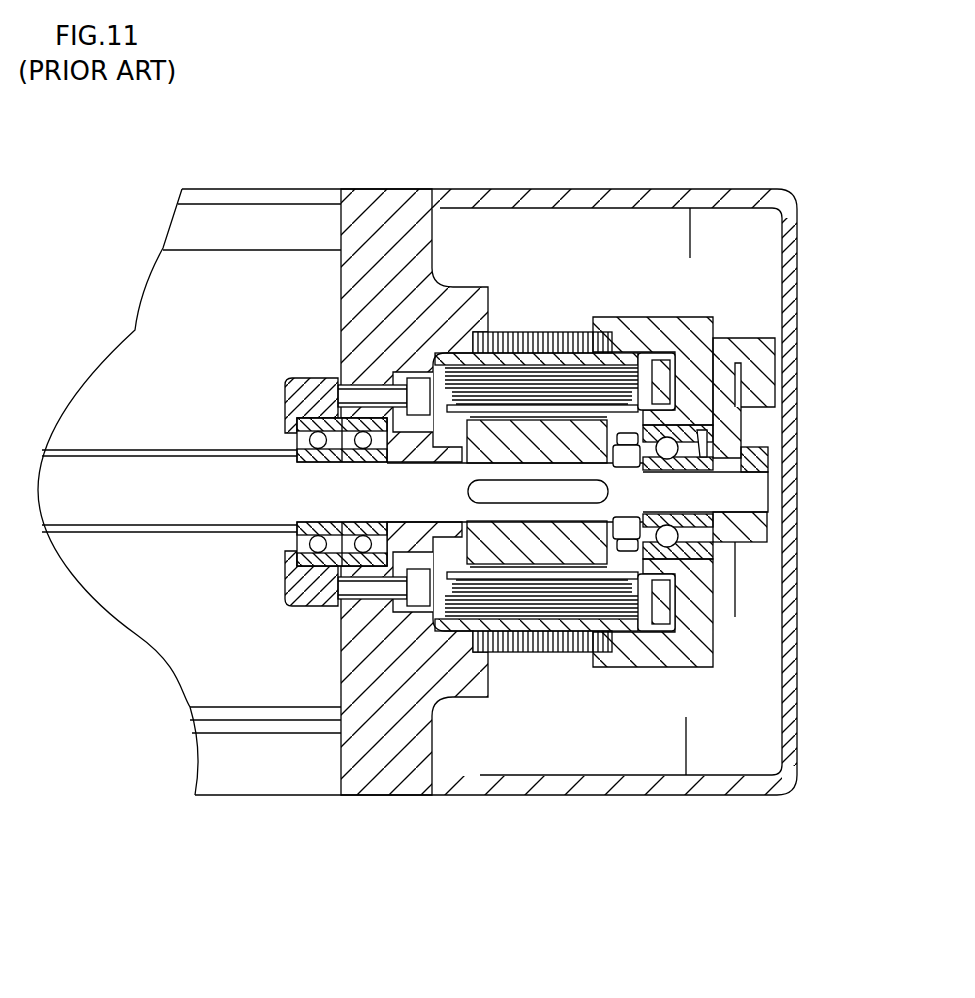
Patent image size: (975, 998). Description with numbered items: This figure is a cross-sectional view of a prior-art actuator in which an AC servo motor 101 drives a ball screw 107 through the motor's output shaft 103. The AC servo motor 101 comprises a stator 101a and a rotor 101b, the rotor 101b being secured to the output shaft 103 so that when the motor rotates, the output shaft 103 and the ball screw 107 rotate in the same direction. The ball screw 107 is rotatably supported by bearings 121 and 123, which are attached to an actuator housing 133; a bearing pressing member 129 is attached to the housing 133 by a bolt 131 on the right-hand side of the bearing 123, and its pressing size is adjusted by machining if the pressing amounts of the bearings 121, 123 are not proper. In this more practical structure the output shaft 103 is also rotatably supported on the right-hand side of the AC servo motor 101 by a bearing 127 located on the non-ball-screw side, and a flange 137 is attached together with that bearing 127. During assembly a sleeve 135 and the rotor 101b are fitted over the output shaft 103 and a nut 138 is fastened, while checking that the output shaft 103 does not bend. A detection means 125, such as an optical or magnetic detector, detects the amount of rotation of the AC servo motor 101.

The AC servo motor 101 is at (531, 680).
The stator 101a is at (570, 620).
The rotor 101b is at (528, 433).
The output shaft 103 is at (322, 508).
The ball screw 107 is at (115, 528).
The bearing 121 is at (310, 558).
The bearing 123 is at (320, 566).
The detection means 125 is at (750, 292).
The bearing 127 is at (680, 577).
The bearing pressing member 129 is at (398, 570).
The bolt 131 is at (413, 600).
The actuator housing 133 is at (402, 190).
The sleeve 135 is at (403, 448).
The flange 137 is at (700, 662).
The nut 138 is at (630, 532).